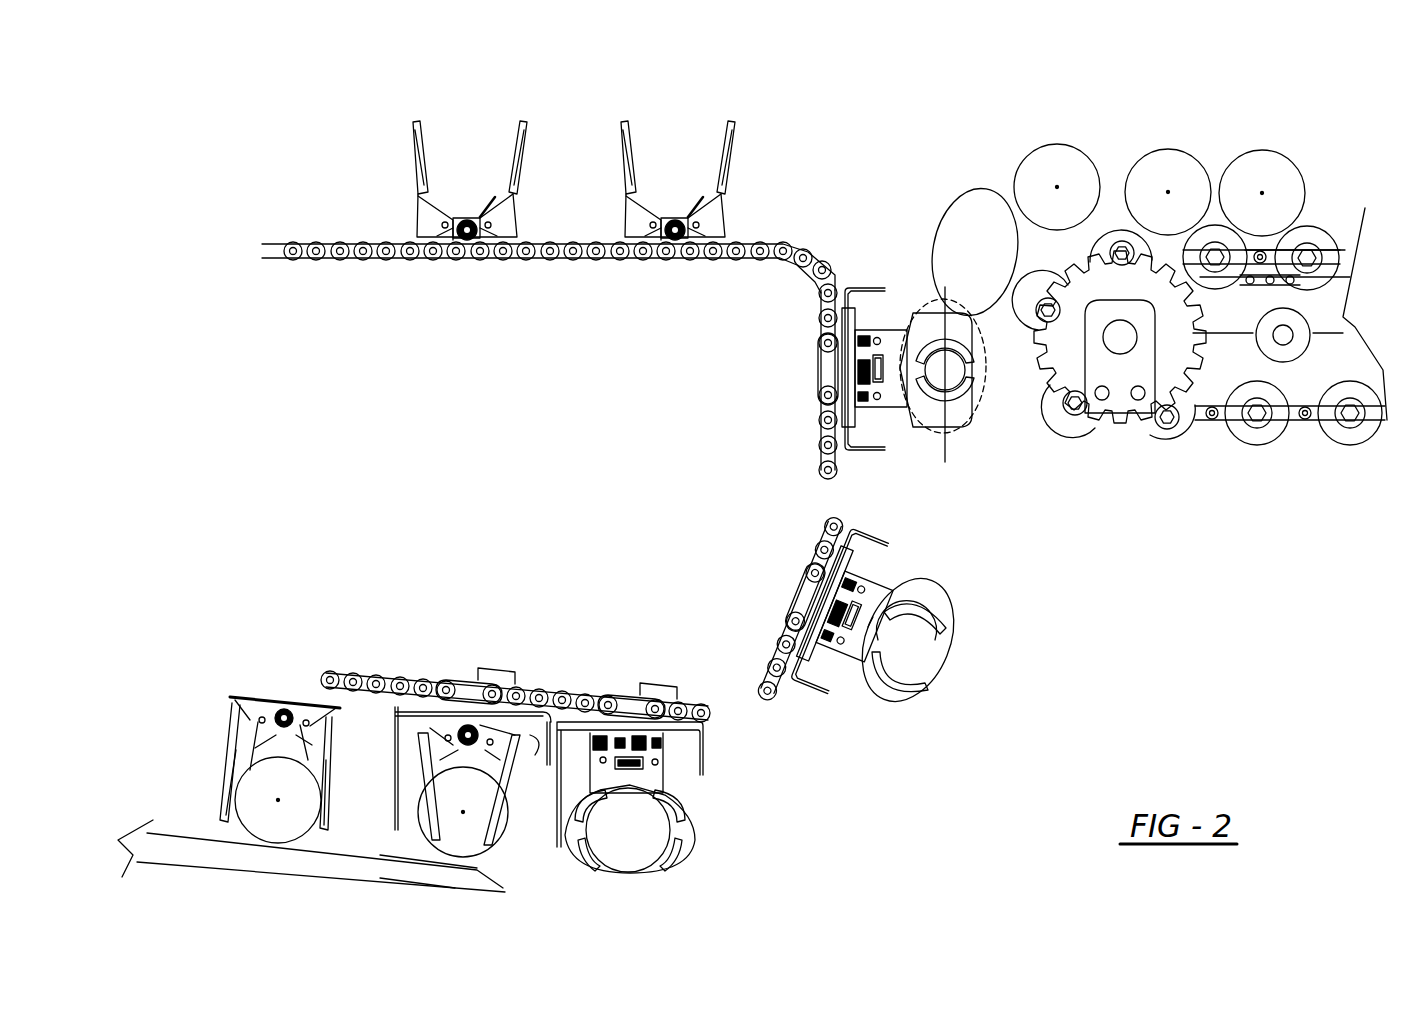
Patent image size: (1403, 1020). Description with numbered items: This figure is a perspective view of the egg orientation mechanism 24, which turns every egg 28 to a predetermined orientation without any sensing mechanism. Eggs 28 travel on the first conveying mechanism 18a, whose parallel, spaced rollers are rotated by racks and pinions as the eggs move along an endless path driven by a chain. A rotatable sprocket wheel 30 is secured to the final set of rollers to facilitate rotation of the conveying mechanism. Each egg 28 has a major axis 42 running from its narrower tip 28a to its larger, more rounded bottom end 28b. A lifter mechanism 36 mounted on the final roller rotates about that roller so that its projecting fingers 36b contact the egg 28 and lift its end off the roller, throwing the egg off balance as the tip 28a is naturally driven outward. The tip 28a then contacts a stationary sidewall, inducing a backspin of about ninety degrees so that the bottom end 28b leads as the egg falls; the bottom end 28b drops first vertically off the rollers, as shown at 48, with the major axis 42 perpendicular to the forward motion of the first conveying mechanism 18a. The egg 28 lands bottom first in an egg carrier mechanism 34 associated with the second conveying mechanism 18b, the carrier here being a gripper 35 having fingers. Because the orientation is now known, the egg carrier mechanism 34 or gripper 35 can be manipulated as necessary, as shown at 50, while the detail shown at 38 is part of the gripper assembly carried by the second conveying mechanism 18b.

The egg orientation mechanism 24 is at (1237, 83).
The gripper 35 is at (410, 138).
The fingers 36b is at (1080, 260).
The egg 28 is at (1265, 150).
The first conveying mechanism 18a is at (1325, 217).
The tip 28a is at (955, 300).
The major axis 42 is at (945, 358).
The egg falling vertically 48 is at (808, 350).
The bottom end 28b is at (950, 432).
The lifter mechanism 36 is at (1112, 452).
The sprocket wheel 30 is at (1167, 420).
The egg carrier mechanism 34 is at (857, 535).
The gripper body 38 is at (884, 590).
The manipulation of gripper 50 is at (369, 660).
The second conveying mechanism 18b is at (470, 655).